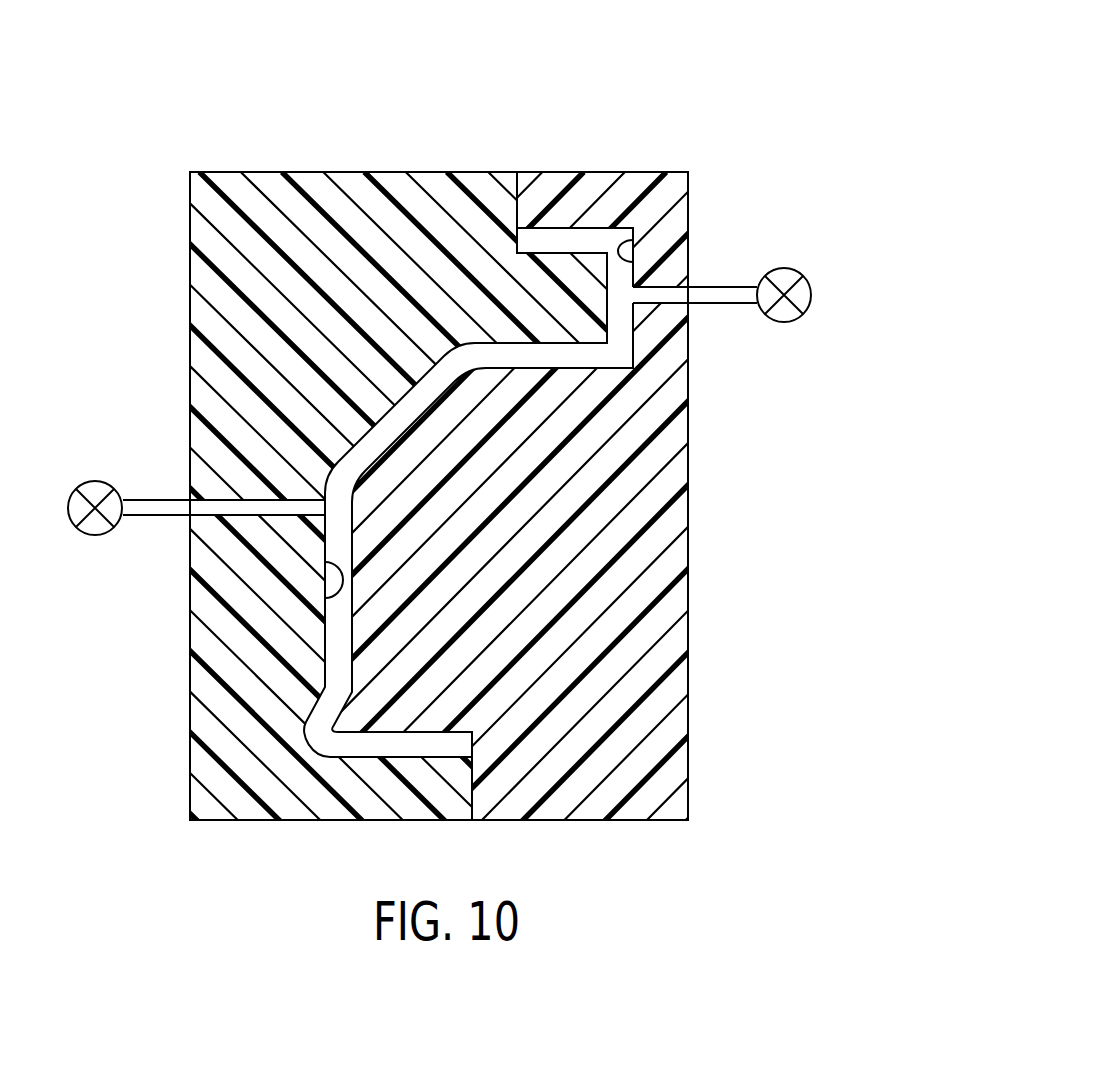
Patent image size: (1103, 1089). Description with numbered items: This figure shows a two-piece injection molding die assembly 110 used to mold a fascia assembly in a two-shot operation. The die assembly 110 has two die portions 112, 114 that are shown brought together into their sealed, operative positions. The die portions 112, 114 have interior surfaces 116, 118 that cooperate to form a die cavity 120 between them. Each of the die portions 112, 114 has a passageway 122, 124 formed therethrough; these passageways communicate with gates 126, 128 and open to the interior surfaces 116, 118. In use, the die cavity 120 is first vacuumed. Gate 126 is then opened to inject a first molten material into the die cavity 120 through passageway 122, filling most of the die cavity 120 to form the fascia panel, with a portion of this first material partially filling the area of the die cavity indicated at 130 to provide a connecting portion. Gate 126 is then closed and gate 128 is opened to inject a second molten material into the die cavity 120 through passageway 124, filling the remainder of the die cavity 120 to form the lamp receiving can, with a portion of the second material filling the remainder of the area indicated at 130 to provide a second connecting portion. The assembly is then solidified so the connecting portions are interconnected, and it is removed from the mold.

The injection molding die assembly 110 is at (698, 121).
The die portion 112 is at (203, 273).
The die portion 114 is at (663, 407).
The interior surface 116 is at (328, 592).
The interior surface 118 is at (633, 241).
The die cavity 120 is at (343, 655).
The passageway 122 is at (240, 505).
The passageway 124 is at (667, 296).
The gate 126 is at (78, 487).
The gate 128 is at (787, 274).
The area of the die cavity 130 is at (532, 358).